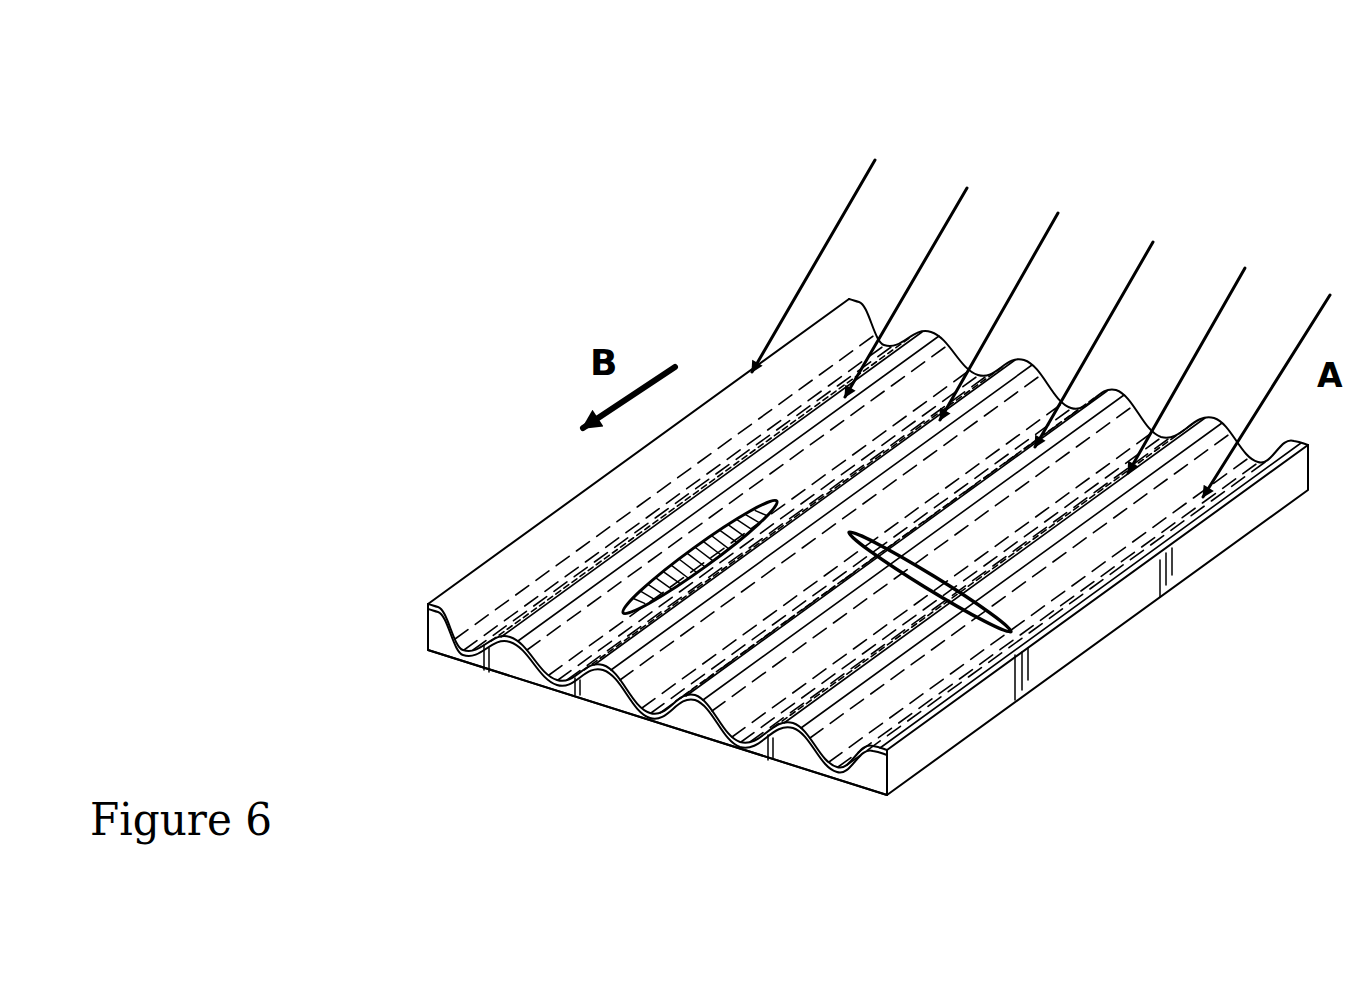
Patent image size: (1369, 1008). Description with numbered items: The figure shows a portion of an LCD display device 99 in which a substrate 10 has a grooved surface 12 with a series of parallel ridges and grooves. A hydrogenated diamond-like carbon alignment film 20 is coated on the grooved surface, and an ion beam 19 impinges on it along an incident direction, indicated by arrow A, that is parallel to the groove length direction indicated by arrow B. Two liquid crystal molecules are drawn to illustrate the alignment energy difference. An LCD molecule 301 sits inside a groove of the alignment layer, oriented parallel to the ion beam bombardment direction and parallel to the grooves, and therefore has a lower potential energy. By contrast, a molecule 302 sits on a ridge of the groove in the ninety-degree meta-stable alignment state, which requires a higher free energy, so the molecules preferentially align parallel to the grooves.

The substrate 10 is at (837, 783).
The grooved surface 12 is at (727, 742).
The ion beam 19 is at (926, 148).
The hydrogenated diamond-like carbon alignment film 20 is at (528, 580).
The LCD display device 99 is at (1047, 755).
The LCD molecule 301 is at (603, 623).
The molecule 302 is at (1015, 623).